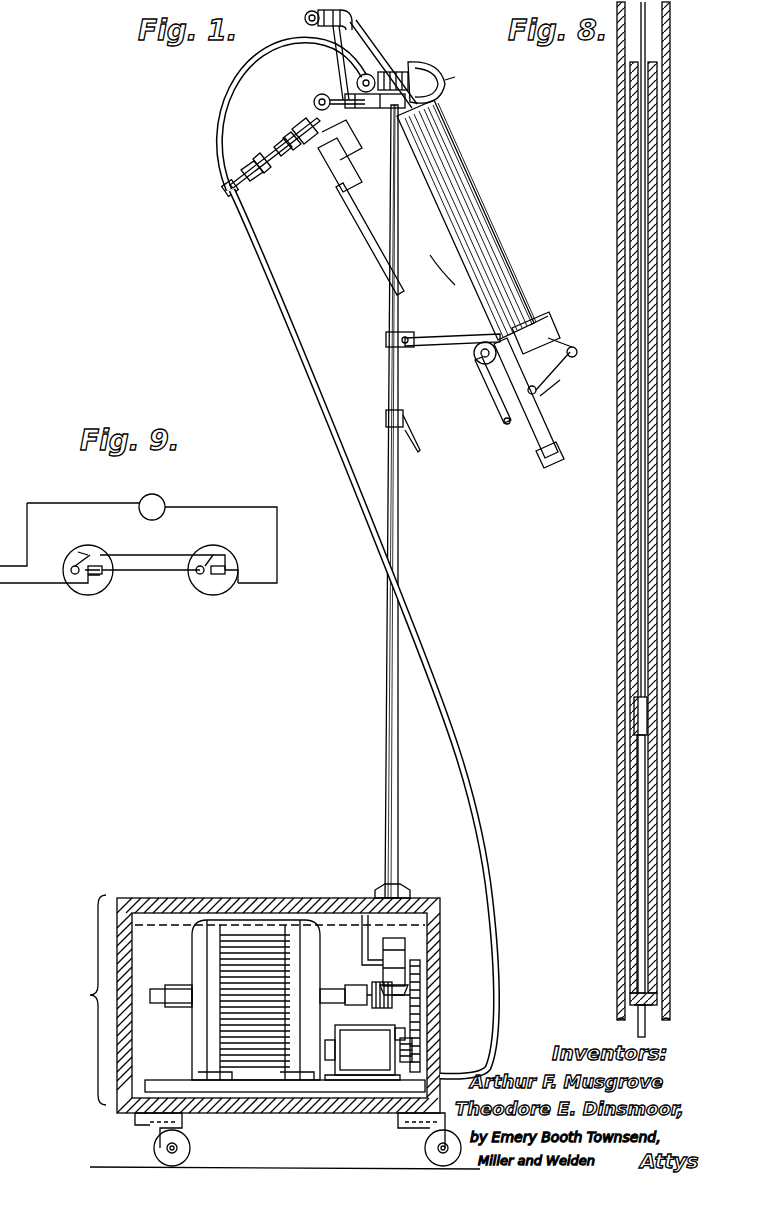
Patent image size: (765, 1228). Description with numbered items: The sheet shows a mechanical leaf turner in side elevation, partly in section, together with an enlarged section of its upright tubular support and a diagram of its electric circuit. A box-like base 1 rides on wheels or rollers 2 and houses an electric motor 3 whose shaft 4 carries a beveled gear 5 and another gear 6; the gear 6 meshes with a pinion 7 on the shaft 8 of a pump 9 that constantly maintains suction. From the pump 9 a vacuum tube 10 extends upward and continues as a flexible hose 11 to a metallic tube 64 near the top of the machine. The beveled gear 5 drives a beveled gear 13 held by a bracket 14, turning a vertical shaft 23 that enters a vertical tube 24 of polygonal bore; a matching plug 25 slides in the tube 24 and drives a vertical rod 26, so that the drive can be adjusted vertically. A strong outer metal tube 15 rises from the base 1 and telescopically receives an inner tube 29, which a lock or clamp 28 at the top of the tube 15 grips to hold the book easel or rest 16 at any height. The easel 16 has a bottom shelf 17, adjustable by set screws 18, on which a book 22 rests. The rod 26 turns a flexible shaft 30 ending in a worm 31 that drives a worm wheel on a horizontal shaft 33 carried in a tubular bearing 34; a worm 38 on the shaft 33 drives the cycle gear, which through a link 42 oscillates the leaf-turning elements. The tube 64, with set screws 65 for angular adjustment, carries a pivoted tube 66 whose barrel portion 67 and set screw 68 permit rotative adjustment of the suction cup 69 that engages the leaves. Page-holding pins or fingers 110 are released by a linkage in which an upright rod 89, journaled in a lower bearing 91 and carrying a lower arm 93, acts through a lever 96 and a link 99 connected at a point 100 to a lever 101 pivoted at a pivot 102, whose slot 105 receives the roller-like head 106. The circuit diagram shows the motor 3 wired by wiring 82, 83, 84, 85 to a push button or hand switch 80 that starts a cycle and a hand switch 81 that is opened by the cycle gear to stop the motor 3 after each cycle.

In FIG. 1, the box-like base 1 is at (276, 1032).
In FIG. 9, the box-like base 1 is at (98, 558).
In FIG. 1, the wheels or rollers 2 is at (192, 1146).
In FIG. 9, the wheels or rollers 2 is at (78, 555).
In FIG. 1, the electric motor 3 is at (210, 965).
In FIG. 9, the electric motor 3 is at (160, 496).
In FIG. 1, the motor shaft 4 is at (350, 985).
In FIG. 9, the motor shaft 4 is at (232, 565).
In FIG. 1, the beveled gear 5 is at (375, 990).
In FIG. 1, the gear 6 is at (420, 990).
In FIG. 1, the pinion 7 is at (412, 1052).
In FIG. 1, the pump shaft 8 is at (398, 1026).
In FIG. 1, the pump 9 is at (360, 1075).
In FIG. 1, the vacuum tube 10 is at (490, 893).
In FIG. 1, the flexible air or vacuum hose 11 is at (283, 47).
In FIG. 1, the beveled gear 13 is at (380, 975).
In FIG. 1, the bracket 14 is at (360, 925).
In FIG. 1, the metal tube 15 is at (396, 797).
In FIG. 8, the metal tube 15 is at (668, 890).
In FIG. 1, the book easel or rest 16 is at (447, 270).
In FIG. 1, the bottom shelf 17 is at (540, 330).
In FIG. 1, the set screws 18 is at (477, 366).
In FIG. 1, the book 22 is at (470, 262).
In FIG. 1, the vertical shaft 23 is at (425, 942).
In FIG. 8, the vertical shaft 23 is at (637, 1030).
In FIG. 8, the vertical tube 24 is at (648, 995).
In FIG. 8, the plug 25 is at (648, 713).
In FIG. 8, the vertical rod 26 is at (660, 507).
In FIG. 1, the lock or clamp 28 is at (410, 412).
In FIG. 1, the inner tube 29 is at (400, 378).
In FIG. 1, the flexible shaft 30 is at (360, 232).
In FIG. 1, the worm 31 is at (346, 143).
In FIG. 1, the horizontal shaft 33 is at (302, 126).
In FIG. 1, the tubular bearing 34 is at (258, 170).
In FIG. 1, the worm 38 is at (296, 152).
In FIG. 1, the link 42 is at (282, 138).
In FIG. 1, the metallic tube 64 is at (340, 85).
In FIG. 1, the set screws 65 is at (300, 12).
In FIG. 1, the tube 66 is at (375, 50).
In FIG. 1, the barrel shaped portion 67 is at (392, 72).
In FIG. 1, the set screw 68 is at (357, 86).
In FIG. 1, the suction member, head or cup 69 is at (428, 95).
In FIG. 9, the push button or hand switch 80 is at (75, 590).
In FIG. 1, the hand switch 81 is at (262, 155).
In FIG. 9, the hand switch 81 is at (208, 595).
In FIG. 9, the wiring 82 is at (92, 510).
In FIG. 9, the wiring 83 is at (208, 508).
In FIG. 9, the wiring 84 is at (157, 548).
In FIG. 9, the wiring 85 is at (155, 575).
In FIG. 1, the upright rod 89 is at (470, 315).
In FIG. 1, the lower bearing 91 is at (542, 462).
In FIG. 1, the lower arm 93 is at (532, 455).
In FIG. 1, the lever 96 is at (490, 405).
In FIG. 1, the link 99 is at (507, 425).
In FIG. 1, the link connection 100 is at (535, 393).
In FIG. 1, the lever 101 is at (565, 370).
In FIG. 1, the pivot 102 is at (555, 390).
In FIG. 1, the slot 105 is at (578, 356).
In FIG. 1, the roller-like head 106 is at (575, 352).
In FIG. 1, the pins or fingers 110 is at (540, 315).